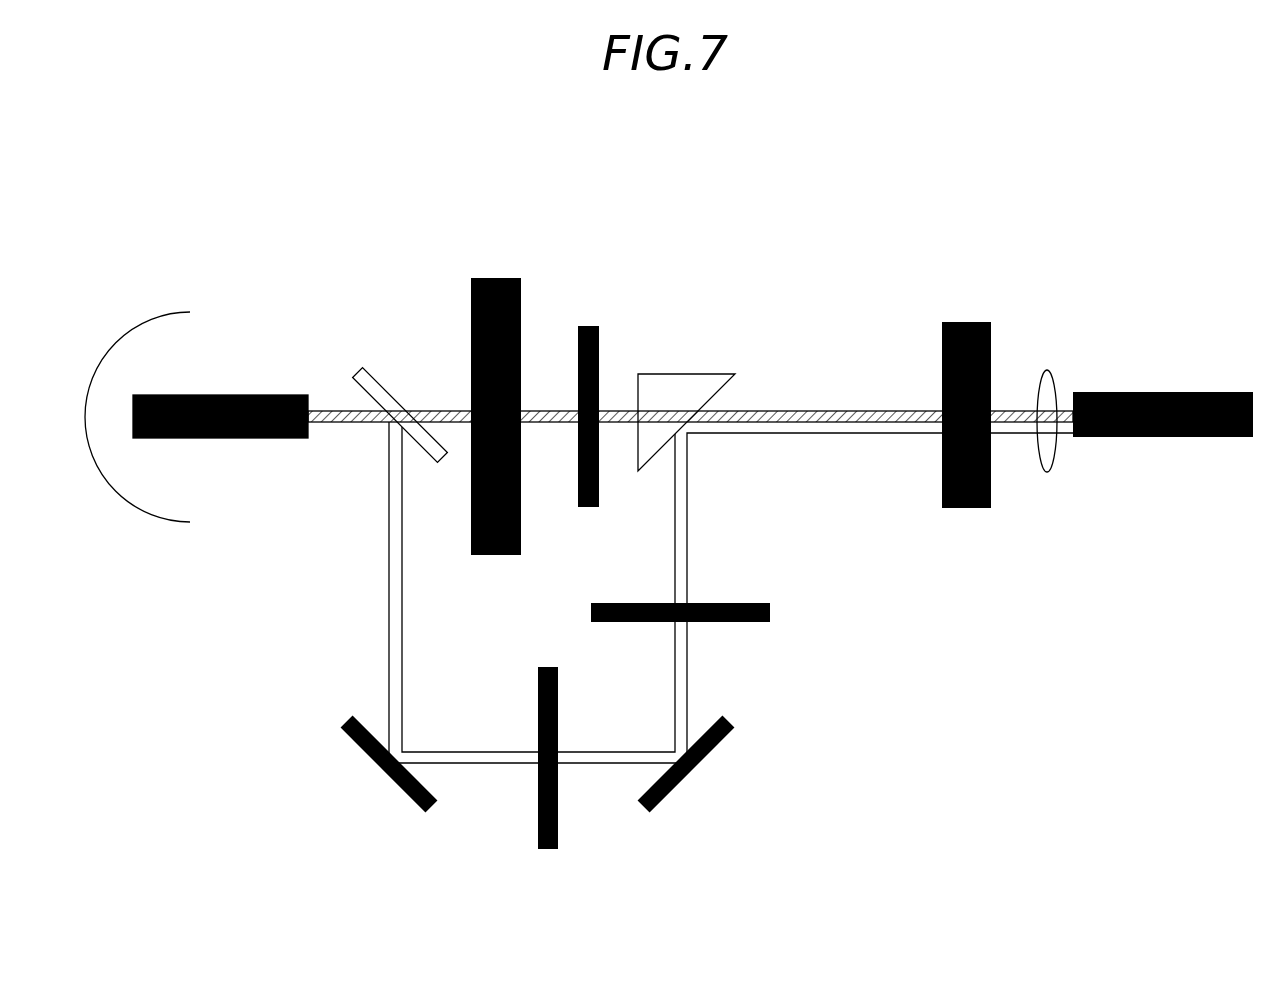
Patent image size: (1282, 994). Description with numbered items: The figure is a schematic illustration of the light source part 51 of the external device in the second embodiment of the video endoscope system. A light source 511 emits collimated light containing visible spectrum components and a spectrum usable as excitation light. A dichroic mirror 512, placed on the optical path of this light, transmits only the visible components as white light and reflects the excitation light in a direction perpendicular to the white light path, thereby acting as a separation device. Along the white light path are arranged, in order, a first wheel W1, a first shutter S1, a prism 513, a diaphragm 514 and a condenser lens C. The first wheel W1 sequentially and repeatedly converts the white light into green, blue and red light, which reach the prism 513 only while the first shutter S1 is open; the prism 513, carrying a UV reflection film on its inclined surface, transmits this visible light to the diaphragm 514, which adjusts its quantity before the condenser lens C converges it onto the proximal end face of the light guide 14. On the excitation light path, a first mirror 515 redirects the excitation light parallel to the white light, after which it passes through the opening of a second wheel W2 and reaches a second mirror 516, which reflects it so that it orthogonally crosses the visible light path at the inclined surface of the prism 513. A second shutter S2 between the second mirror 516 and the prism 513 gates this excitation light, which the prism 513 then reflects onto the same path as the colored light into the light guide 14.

The light source part 51 is at (767, 680).
The light source 511 is at (97, 466).
The dichroic mirror 512 is at (353, 376).
The prism 513 is at (688, 374).
The diaphragm 514 is at (968, 322).
The first mirror 515 is at (360, 746).
The second mirror 516 is at (735, 745).
The first wheel W1 is at (500, 278).
The second wheel W2 is at (548, 850).
The first shutter S1 is at (590, 326).
The second shutter S2 is at (770, 610).
The condenser lens C is at (1046, 370).
The light guide 14 is at (1165, 392).